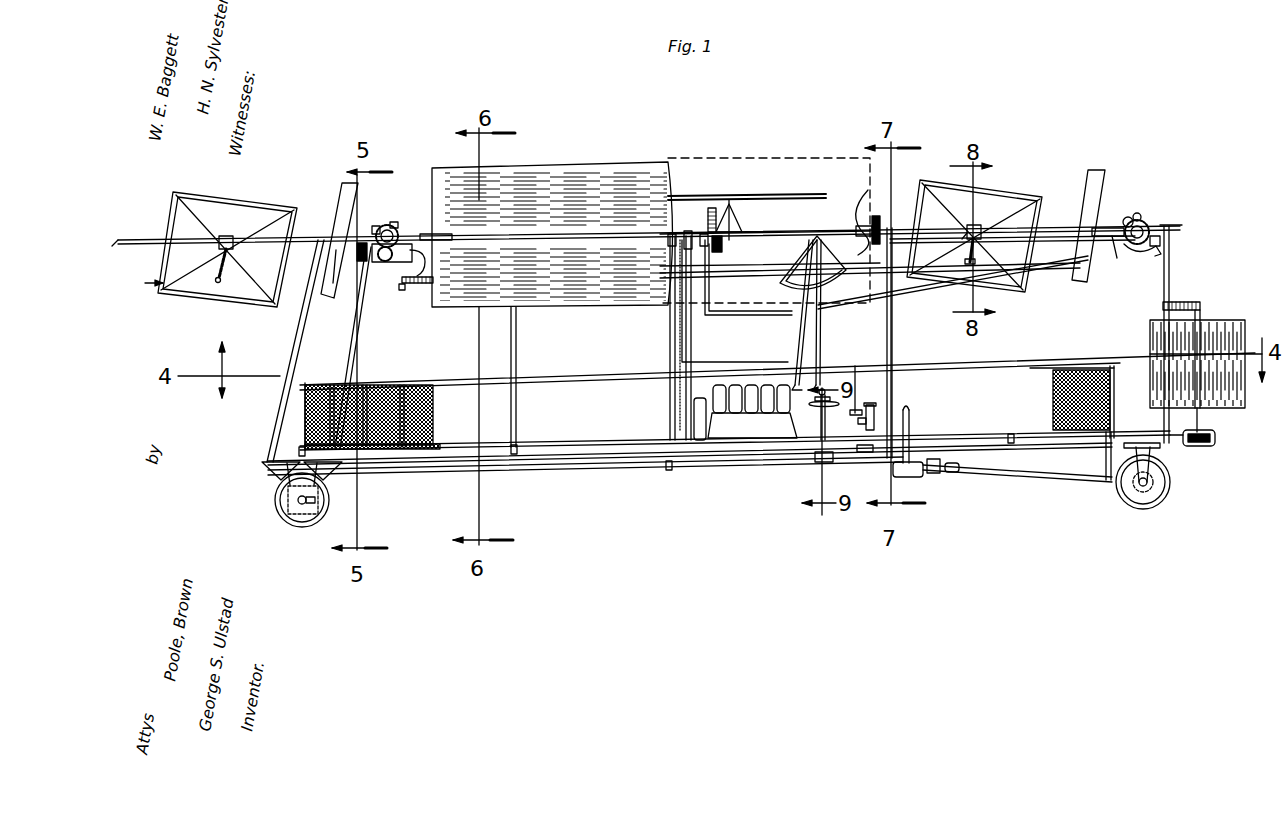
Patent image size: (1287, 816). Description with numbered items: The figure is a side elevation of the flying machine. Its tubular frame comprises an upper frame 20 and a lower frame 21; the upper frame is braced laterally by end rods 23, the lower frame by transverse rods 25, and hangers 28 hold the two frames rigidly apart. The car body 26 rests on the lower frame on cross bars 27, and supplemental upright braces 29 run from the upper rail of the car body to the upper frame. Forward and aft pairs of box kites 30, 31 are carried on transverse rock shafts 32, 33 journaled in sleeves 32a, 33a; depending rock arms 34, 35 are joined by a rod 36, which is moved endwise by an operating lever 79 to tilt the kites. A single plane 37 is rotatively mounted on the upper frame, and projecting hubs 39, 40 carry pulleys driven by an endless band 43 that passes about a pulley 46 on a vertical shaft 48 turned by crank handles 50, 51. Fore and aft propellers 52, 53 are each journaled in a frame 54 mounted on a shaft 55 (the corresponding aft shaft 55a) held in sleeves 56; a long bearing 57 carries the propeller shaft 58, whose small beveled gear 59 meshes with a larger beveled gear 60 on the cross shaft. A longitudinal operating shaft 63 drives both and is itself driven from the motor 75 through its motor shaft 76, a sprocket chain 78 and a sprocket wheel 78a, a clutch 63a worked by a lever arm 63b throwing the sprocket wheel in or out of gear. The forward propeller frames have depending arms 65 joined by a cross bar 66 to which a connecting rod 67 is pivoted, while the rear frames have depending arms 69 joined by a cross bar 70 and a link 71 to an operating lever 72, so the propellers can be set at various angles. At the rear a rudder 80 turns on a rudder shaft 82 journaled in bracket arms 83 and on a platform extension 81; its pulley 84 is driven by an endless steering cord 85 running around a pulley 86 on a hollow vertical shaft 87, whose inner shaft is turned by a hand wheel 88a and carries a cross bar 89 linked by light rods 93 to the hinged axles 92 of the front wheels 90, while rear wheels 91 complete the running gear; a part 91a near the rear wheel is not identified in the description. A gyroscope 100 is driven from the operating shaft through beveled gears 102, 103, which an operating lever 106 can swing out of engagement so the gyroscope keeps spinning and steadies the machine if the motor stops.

The upper frame 20 is at (1166, 220).
The lower frame 21 is at (558, 463).
The end rods 23 is at (1198, 217).
The transverse rods 25 is at (262, 465).
The car body 26 is at (447, 397).
The cross bars 27 is at (300, 452).
The hangers 28 is at (299, 334).
The supplemental supporting hangers 29 is at (349, 364).
The forward box kites 30 is at (141, 282).
The aft box kites 31 is at (1005, 190).
The rock shaft 32 is at (212, 247).
The sleeve 32a is at (236, 228).
The rock shaft 33 is at (962, 239).
The sleeve 33a is at (979, 226).
The rock arm 34 is at (216, 276).
The rock arm 35 is at (984, 240).
The rod 36 is at (757, 270).
The single plane 37 is at (545, 170).
The projecting hub 39 is at (880, 222).
The projecting hub 40 is at (875, 212).
The endless band 43 is at (893, 335).
The pulley 46 is at (861, 458).
The vertical shaft 48 is at (857, 422).
The crank handle 50 is at (875, 406).
The crank handle 51 is at (855, 381).
The fore propellers 52 is at (340, 192).
The aft propellers 53 is at (1101, 168).
The propeller journal frame 54 is at (388, 263).
The shaft 55 is at (384, 262).
The shaft 55a is at (1128, 218).
The sleeves 56 is at (398, 236).
The long bearing 57 is at (333, 285).
The propeller shaft 58 is at (1080, 241).
The beveled gear 59 is at (380, 228).
The beveled gear 60 is at (394, 226).
The operating shaft 63 is at (772, 232).
The clutch 63a is at (682, 240).
The lever arm 63b is at (737, 357).
The depending arm 65 is at (401, 291).
The cross bar 66 is at (412, 284).
The connecting rod 67 is at (762, 281).
The depending arms 69 is at (1161, 240).
The cross bar 70 is at (1155, 250).
The link 71 is at (1052, 272).
The operating lever 72 is at (821, 318).
The motor 75 is at (752, 432).
The motor shaft 76 is at (704, 398).
The sprocket chain 78 is at (669, 346).
The sprocket wheel 78a is at (707, 222).
The operating lever 79 is at (793, 339).
The rudder 80 is at (1226, 323).
The platform extension 81 is at (1133, 431).
The rudder shaft 82 is at (1203, 312).
The bracket arms 83 is at (1190, 302).
The pulley 84 is at (1216, 438).
The steering cord 85 is at (1062, 444).
The pulley 86 is at (803, 447).
The vertical shaft 87 is at (828, 417).
The hand wheel 88a is at (809, 393).
The cross bar 89 is at (822, 462).
The front wheels 90 is at (279, 517).
The rear wheels 91 is at (1172, 477).
The bracket 91a is at (916, 476).
The hinged axles 92 is at (313, 503).
The light rods 93 is at (404, 474).
The gyroscope 100 is at (700, 204).
The beveled gear 102 is at (730, 207).
The beveled gear 103 is at (730, 248).
The operating lever 106 is at (706, 292).